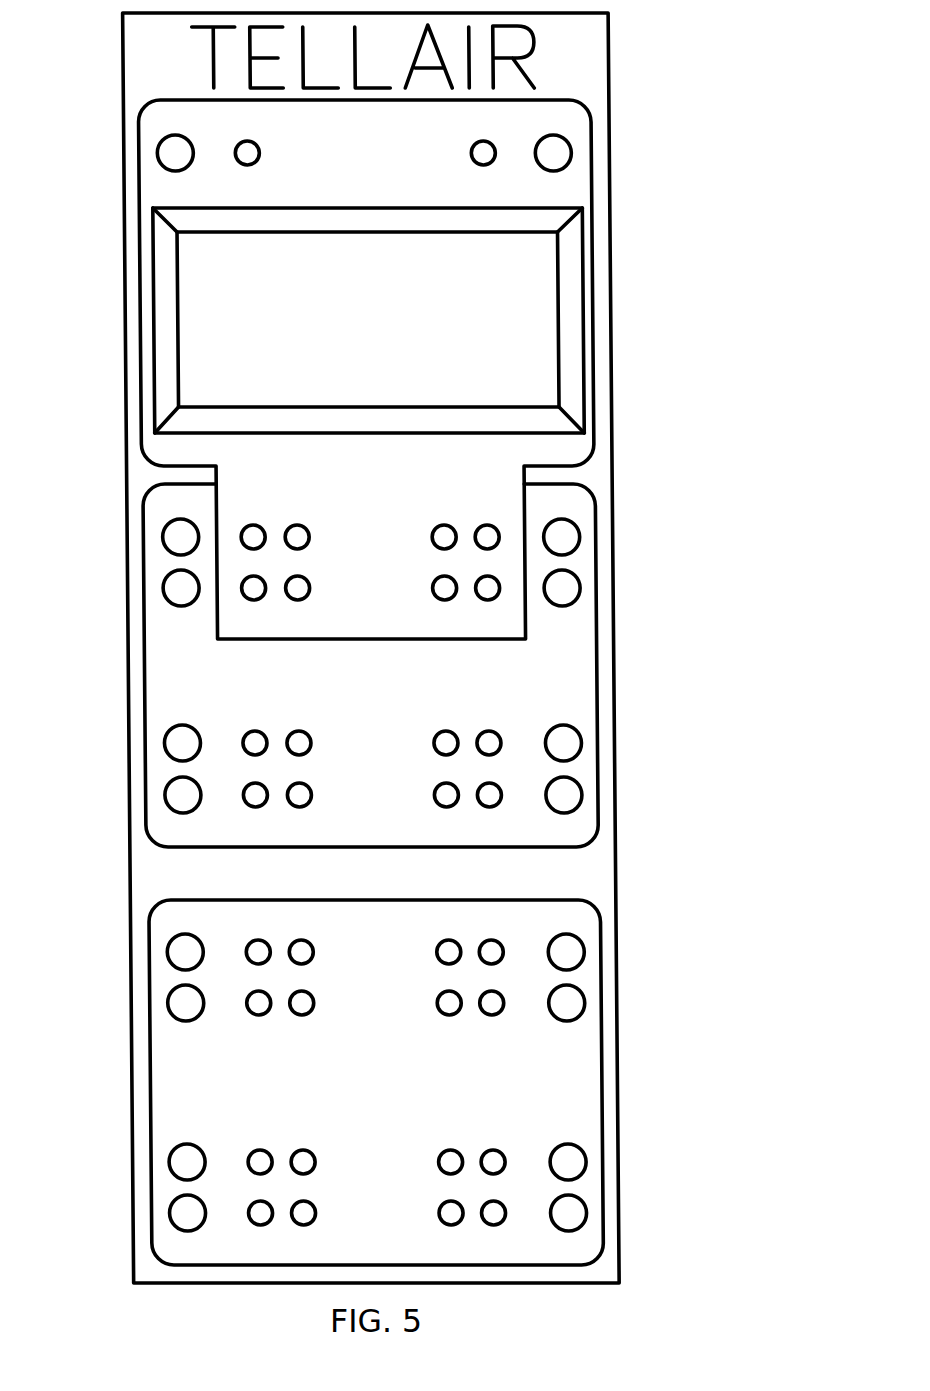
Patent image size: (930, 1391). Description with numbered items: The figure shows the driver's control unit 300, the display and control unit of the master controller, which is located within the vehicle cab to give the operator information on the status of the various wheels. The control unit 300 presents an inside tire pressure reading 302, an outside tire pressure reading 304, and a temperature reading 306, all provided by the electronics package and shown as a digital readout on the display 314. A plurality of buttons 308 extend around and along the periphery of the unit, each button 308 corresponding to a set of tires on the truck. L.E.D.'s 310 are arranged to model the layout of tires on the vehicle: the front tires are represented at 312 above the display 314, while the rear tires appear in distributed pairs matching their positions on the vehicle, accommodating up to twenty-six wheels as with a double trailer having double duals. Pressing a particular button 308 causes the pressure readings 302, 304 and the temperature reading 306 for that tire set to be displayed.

The control unit 300 is at (728, 473).
The inside tire pressure reading 302 is at (537, 264).
The outside tire pressure reading 304 is at (535, 318).
The temperature reading 306 is at (533, 370).
The buttons 308 is at (569, 517).
The L.E.D.'s 310 is at (301, 732).
The front tires 312 is at (587, 106).
The display 314 is at (156, 433).